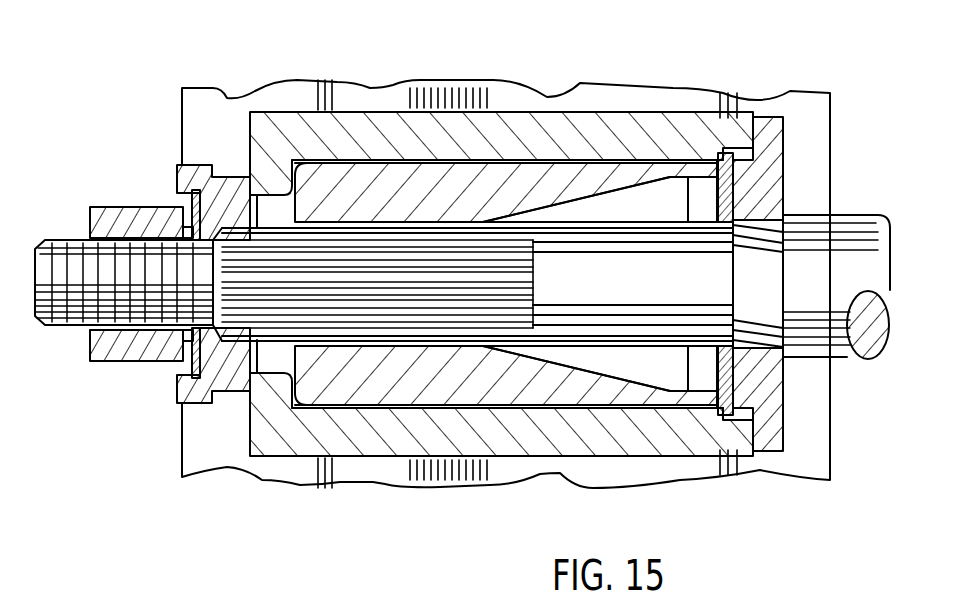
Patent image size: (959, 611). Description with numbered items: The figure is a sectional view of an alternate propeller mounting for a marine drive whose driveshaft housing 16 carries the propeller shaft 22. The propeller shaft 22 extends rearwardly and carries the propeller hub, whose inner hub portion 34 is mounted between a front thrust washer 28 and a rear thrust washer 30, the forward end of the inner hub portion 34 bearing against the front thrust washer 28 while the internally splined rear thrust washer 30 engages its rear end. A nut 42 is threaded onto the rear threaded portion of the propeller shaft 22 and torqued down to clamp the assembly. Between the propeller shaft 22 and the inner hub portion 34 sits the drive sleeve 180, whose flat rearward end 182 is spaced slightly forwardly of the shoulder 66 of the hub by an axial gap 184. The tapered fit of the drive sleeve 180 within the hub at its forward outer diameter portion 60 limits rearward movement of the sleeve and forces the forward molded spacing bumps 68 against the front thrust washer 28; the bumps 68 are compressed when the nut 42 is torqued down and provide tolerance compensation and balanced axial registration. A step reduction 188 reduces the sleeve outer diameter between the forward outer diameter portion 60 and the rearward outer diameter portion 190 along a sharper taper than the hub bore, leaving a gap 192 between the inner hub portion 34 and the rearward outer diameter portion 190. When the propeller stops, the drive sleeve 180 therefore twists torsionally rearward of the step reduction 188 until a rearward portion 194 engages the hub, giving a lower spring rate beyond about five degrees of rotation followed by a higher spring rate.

The driveshaft housing 16 is at (380, 72).
The propeller shaft 22 is at (850, 223).
The front thrust washer 28 is at (772, 158).
The rear thrust washer 30 is at (193, 165).
The inner hub portion 34 is at (555, 118).
The nut 42 is at (123, 208).
The forward outer diameter portion 60 is at (683, 118).
The shoulder 66 is at (283, 173).
The forward molded spacing bumps 68 is at (733, 393).
The drive sleeve 180 is at (495, 241).
The flat rearward end 182 is at (337, 208).
The axial gap 184 is at (298, 168).
The step reduction 188 is at (548, 170).
The rearward outer diameter portion 190 is at (388, 168).
The gap 192 is at (440, 122).
The rearward portion 194 is at (363, 378).